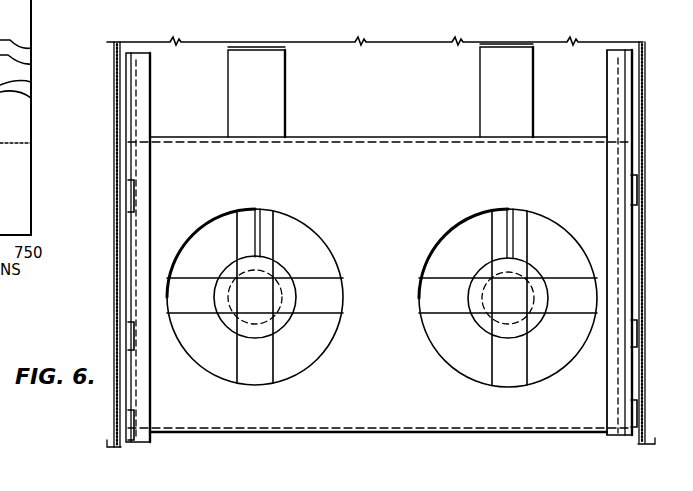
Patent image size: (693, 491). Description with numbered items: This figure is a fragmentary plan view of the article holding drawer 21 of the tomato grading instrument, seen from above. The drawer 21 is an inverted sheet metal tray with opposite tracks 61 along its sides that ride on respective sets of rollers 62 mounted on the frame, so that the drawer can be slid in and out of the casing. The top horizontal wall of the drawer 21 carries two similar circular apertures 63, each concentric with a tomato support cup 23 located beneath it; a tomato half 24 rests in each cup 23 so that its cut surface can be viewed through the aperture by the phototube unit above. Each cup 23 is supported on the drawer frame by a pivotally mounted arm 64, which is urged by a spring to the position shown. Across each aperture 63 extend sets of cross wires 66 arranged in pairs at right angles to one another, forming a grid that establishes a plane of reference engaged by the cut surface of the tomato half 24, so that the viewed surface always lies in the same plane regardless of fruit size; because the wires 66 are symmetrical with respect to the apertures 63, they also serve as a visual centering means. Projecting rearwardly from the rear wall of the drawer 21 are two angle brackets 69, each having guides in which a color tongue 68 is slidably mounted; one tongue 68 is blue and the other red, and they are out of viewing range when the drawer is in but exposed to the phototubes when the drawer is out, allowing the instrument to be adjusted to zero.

The drawer 21 is at (410, 147).
The tomato support cup 23 is at (232, 316).
The tomato half 24 is at (277, 328).
The track 61 is at (148, 117).
The roller 62 is at (126, 325).
The aperture 63 is at (298, 234).
The pivotally mounted arm 64 is at (262, 218).
The cross wire 66 is at (304, 278).
The color tongue 68 is at (270, 45).
The angle bracket 69 is at (272, 90).